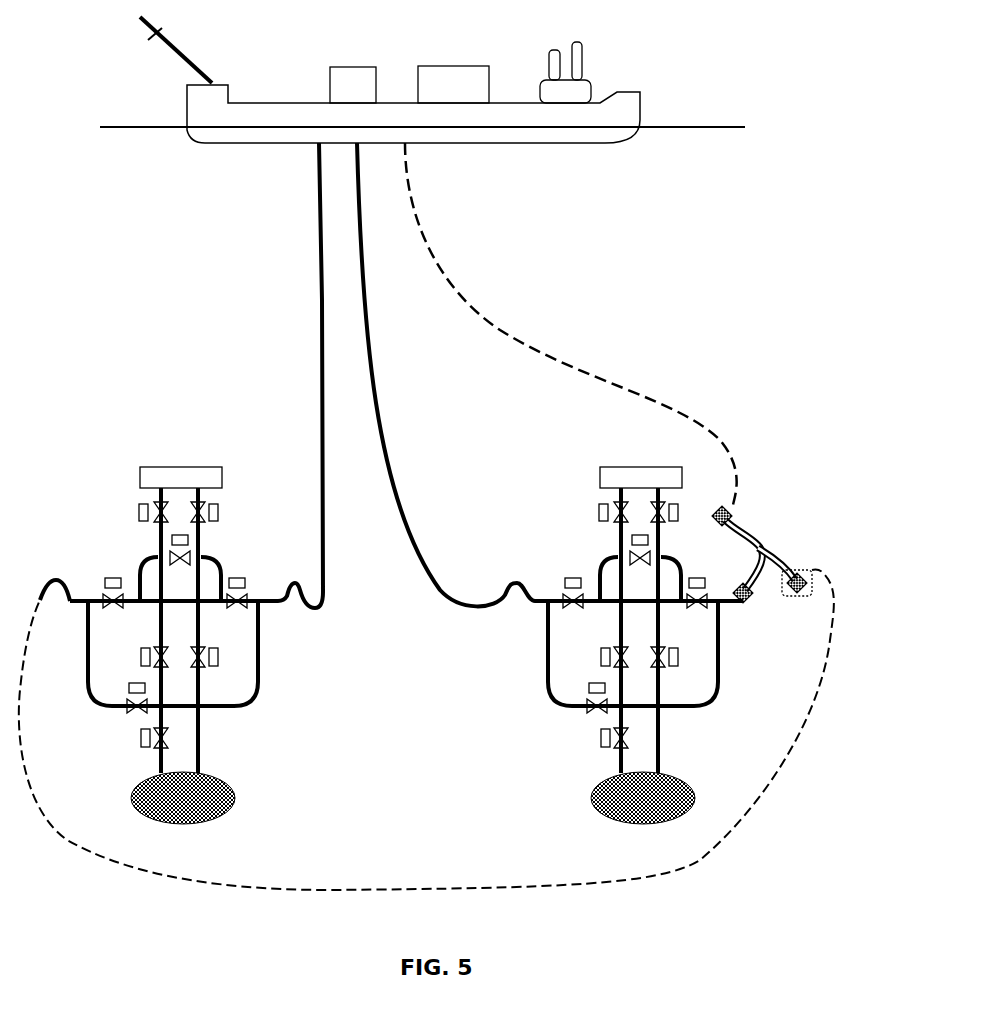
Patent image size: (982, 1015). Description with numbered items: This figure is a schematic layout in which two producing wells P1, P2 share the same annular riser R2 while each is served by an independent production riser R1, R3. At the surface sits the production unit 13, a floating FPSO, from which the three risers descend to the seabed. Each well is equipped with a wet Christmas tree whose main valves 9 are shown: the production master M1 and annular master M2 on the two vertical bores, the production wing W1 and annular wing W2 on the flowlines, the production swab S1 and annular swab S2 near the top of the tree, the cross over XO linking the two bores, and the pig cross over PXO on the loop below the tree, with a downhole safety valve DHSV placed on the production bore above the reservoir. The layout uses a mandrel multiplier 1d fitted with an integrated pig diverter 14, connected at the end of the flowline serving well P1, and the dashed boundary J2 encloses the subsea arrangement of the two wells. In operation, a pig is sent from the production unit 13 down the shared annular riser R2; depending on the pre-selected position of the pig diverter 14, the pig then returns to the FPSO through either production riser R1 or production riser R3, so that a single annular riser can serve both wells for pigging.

The production unit 13 is at (413, 103).
The element FPSO is at (422, 80).
The production riser R1 is at (375, 370).
The annular riser R2 is at (548, 330).
The production riser R3 is at (320, 415).
The pig diverter 14 is at (760, 550).
The mandrel multiplier 1d is at (780, 567).
The main valves of a WCT 9 is at (262, 688).
The subsea region boundary J2 is at (432, 889).
The producing well P1 is at (612, 802).
The producing well P2 is at (207, 802).
The production swab S1 is at (409, 512).
The annular swab S2 is at (404, 512).
The cross over XO is at (410, 560).
The production wing W1 is at (405, 601).
The annular wing W2 is at (405, 601).
The production master M1 is at (409, 657).
The annular master M2 is at (405, 657).
The pig cross over PXO is at (336, 698).
The downhole safety valve DHSV is at (359, 738).